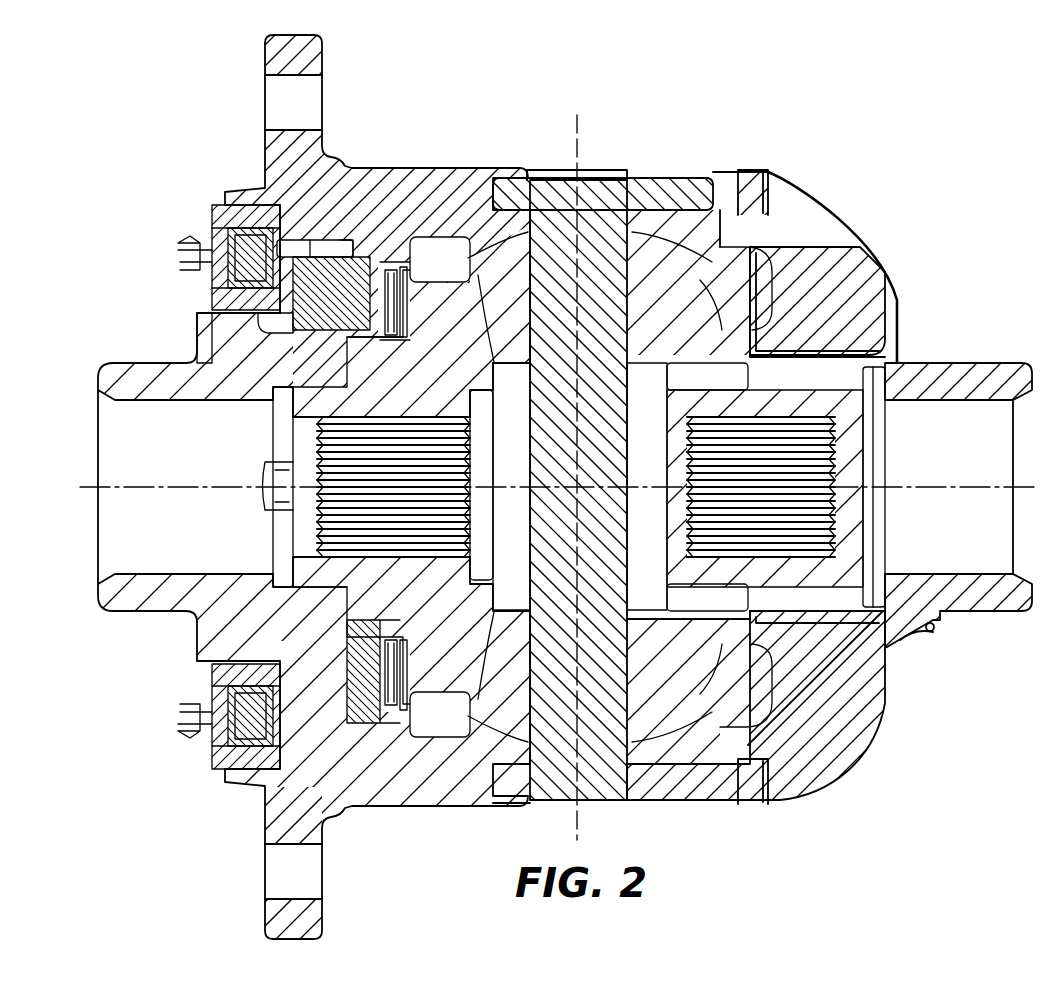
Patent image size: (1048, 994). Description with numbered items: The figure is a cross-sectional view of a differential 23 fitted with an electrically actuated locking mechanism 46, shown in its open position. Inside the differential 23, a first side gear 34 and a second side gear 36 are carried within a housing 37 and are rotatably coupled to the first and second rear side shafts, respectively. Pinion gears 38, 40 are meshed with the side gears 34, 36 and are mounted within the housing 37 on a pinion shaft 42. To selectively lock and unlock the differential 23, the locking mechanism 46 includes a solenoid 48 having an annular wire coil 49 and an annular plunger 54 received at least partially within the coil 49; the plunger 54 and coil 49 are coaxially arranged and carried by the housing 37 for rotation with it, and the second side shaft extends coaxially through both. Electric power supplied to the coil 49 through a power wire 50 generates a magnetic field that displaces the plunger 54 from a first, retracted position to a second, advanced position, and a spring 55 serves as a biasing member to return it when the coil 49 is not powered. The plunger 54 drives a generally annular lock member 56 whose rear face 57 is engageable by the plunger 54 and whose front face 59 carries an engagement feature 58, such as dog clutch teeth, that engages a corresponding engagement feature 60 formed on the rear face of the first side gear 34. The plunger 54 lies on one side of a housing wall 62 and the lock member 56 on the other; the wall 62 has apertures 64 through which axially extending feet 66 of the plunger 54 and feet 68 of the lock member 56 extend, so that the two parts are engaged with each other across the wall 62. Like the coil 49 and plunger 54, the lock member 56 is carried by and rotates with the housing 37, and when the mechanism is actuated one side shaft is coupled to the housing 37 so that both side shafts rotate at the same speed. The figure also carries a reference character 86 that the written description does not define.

The differential 23 is at (776, 162).
The first side gear 34 is at (316, 405).
The second side gear 36 is at (855, 405).
The housing 37 is at (480, 168).
The pinion gear 38 is at (700, 242).
The pinion gear 40 is at (665, 710).
The pinion shaft 42 is at (597, 220).
The locking mechanism 46 is at (212, 297).
The solenoid 48 is at (213, 764).
The annular wire coil 49 is at (190, 258).
The power wire 50 is at (215, 740).
The plunger 54 is at (197, 323).
The spring 55 is at (388, 338).
The lock member 56 is at (357, 265).
The rear face 57 is at (253, 270).
The engagement feature 58 is at (393, 275).
The front face 59 is at (390, 262).
The engagement feature 60 is at (403, 270).
The housing wall 62 is at (258, 683).
The apertures 64 is at (347, 240).
The feet 66 is at (290, 305).
The feet 68 is at (310, 265).
The axis of rotation 86 is at (84, 495).